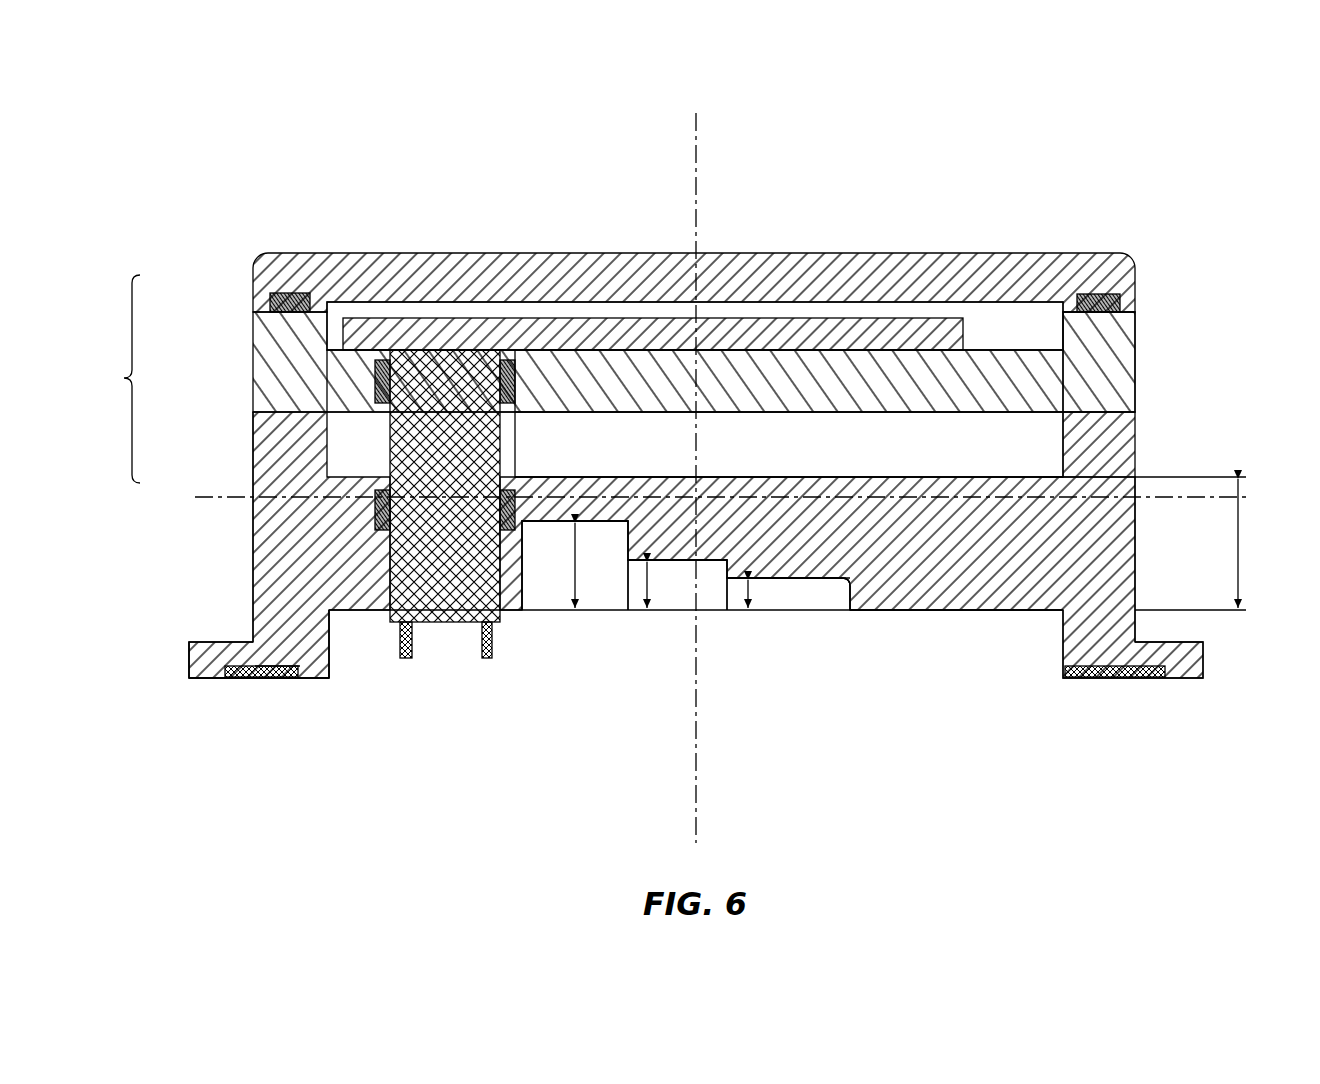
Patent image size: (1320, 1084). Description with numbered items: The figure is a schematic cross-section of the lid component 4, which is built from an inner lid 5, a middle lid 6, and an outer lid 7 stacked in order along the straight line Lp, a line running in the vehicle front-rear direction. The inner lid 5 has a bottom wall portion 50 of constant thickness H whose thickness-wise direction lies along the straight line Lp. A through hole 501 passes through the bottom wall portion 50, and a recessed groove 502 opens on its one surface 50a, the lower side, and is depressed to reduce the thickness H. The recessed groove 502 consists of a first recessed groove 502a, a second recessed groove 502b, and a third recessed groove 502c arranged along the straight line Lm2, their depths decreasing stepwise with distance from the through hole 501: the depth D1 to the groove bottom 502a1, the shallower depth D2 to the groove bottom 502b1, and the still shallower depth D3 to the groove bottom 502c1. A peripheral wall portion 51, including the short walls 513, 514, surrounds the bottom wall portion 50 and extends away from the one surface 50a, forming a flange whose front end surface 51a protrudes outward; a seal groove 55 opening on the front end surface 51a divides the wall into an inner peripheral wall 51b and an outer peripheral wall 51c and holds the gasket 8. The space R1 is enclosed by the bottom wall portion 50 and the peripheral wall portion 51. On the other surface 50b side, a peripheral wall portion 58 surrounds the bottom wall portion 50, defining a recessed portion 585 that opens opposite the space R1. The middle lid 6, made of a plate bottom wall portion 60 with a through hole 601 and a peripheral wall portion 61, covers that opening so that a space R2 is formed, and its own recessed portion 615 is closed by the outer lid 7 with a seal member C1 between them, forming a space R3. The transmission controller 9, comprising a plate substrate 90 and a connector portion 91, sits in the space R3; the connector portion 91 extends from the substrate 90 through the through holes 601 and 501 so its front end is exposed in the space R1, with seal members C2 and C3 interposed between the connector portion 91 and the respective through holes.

The lid component 4 is at (119, 379).
The inner lid 5 is at (251, 482).
The middle lid 6 is at (251, 364).
The outer lid 7 is at (251, 284).
The gasket 8 is at (240, 680).
The transmission controller 9 is at (653, 237).
The substrate 90 is at (648, 333).
The connector portion 91 is at (445, 429).
The through hole 501 is at (460, 627).
The bottom wall portion 50 is at (718, 546).
The one surface 50a is at (893, 612).
The other surface 50b is at (976, 471).
The recessed groove 502 is at (681, 583).
The first recessed groove 502a is at (546, 552).
The second recessed groove 502b is at (686, 572).
The third recessed groove 502c is at (790, 592).
The groove bottom 502a1 is at (549, 518).
The groove bottom 502b1 is at (668, 557).
The groove bottom 502c1 is at (770, 576).
The peripheral wall portion 51 is at (665, 620).
The front end surface 51a is at (190, 675).
The inner peripheral wall 51b is at (313, 680).
The outer peripheral wall 51c is at (203, 680).
The short wall 513 is at (252, 640).
The short wall 514 is at (1137, 628).
The seal groove 55 is at (264, 662).
The peripheral wall portion 58 is at (1110, 466).
The recessed portion 585 is at (1043, 472).
The bottom wall portion 60 is at (1020, 388).
The through hole 601 is at (518, 385).
The peripheral wall portion 61 is at (1113, 333).
The recessed portion 615 is at (1043, 343).
The seal member C1 is at (290, 314).
The seal member C2 is at (375, 381).
The seal member C3 is at (375, 512).
The space R1 is at (951, 687).
The space R2 is at (888, 458).
The space R3 is at (1011, 344).
The depth D1 is at (589, 565).
The depth D2 is at (663, 585).
The depth D3 is at (731, 599).
The thickness H is at (1200, 543).
The straight line Lp is at (699, 460).
The straight line Lm2 is at (752, 494).